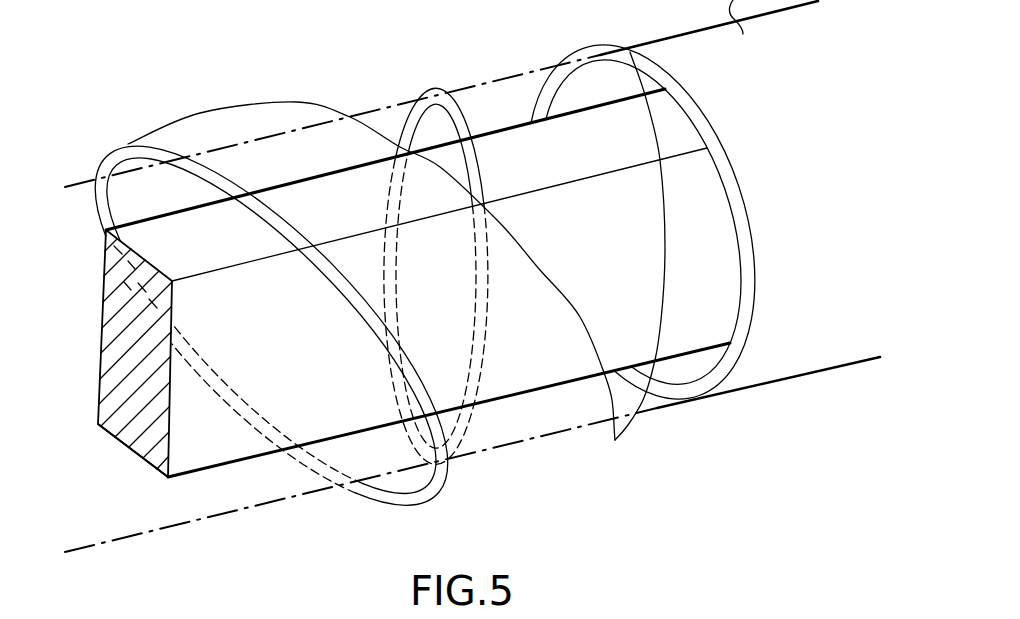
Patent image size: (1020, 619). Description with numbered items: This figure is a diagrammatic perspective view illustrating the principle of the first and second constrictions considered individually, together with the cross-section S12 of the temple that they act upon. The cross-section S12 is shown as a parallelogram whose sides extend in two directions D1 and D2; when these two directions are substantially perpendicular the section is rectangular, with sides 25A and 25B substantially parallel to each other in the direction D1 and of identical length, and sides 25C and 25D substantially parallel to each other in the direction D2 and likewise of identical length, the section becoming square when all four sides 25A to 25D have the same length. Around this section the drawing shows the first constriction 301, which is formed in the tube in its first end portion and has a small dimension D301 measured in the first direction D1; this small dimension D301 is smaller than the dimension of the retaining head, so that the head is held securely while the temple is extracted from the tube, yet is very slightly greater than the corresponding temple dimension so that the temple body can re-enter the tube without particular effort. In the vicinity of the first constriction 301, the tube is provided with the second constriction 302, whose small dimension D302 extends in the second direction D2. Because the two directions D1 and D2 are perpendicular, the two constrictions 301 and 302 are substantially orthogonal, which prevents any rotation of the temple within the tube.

The side 25A is at (99, 346).
The side 25B is at (387, 324).
The side 25C is at (291, 195).
The side 25D is at (201, 470).
The cross-section of the temple S12 is at (132, 427).
The first constriction 301 is at (107, 157).
The second constriction 302 is at (422, 108).
The small dimension of the first constriction D301 is at (252, 206).
The small dimension of the second constriction D302 is at (398, 262).
The first direction D1 is at (698, 551).
The second direction D2 is at (698, 551).